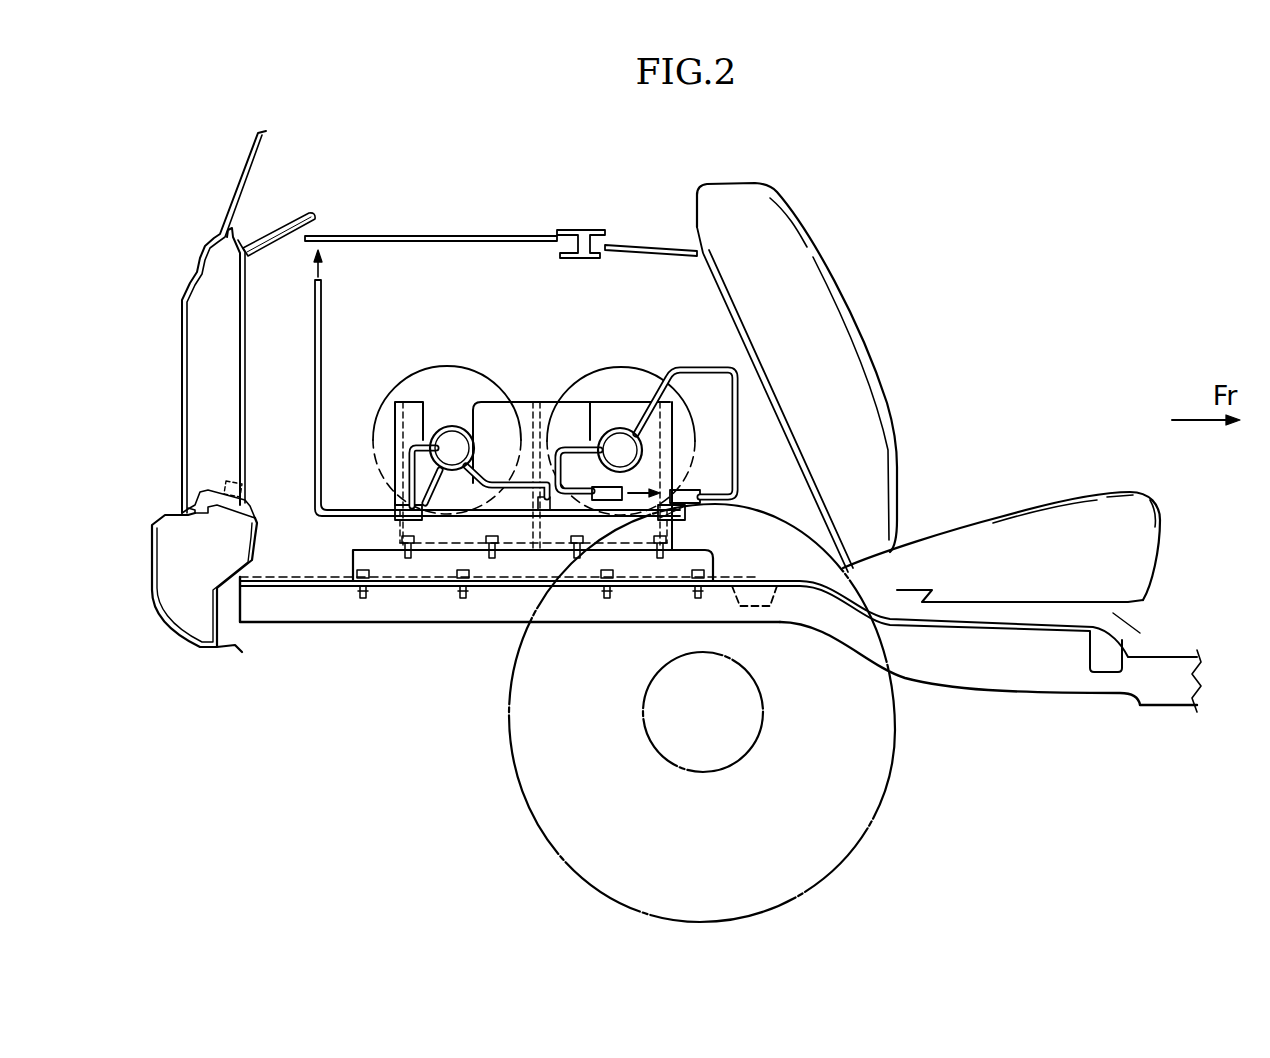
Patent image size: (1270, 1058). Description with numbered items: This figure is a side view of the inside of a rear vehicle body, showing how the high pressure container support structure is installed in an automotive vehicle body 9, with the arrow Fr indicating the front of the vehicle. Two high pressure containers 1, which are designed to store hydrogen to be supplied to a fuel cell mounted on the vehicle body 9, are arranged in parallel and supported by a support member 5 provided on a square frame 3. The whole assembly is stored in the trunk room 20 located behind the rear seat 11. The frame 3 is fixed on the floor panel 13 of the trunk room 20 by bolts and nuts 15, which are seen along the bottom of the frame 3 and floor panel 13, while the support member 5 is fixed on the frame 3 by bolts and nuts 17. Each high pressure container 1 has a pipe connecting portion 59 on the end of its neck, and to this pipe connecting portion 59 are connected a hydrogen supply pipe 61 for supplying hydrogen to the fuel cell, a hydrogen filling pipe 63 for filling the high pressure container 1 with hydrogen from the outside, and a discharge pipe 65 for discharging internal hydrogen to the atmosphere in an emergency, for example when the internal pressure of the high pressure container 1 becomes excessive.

The high pressure container 1 is at (577, 396).
The square frame 3 is at (350, 568).
The support member 5 is at (410, 407).
The automotive vehicle body 9 is at (180, 378).
The rear seat 11 is at (832, 268).
The floor panel 13 is at (392, 586).
The bolts and nuts 15 is at (363, 598).
The bolts and nuts 17 is at (410, 560).
The trunk room 20 is at (366, 293).
The pipe connecting portion 59 is at (452, 445).
The hydrogen supply pipe 61 is at (603, 410).
The hydrogen filling pipe 63 is at (504, 483).
The discharge pipe 65 is at (314, 380).